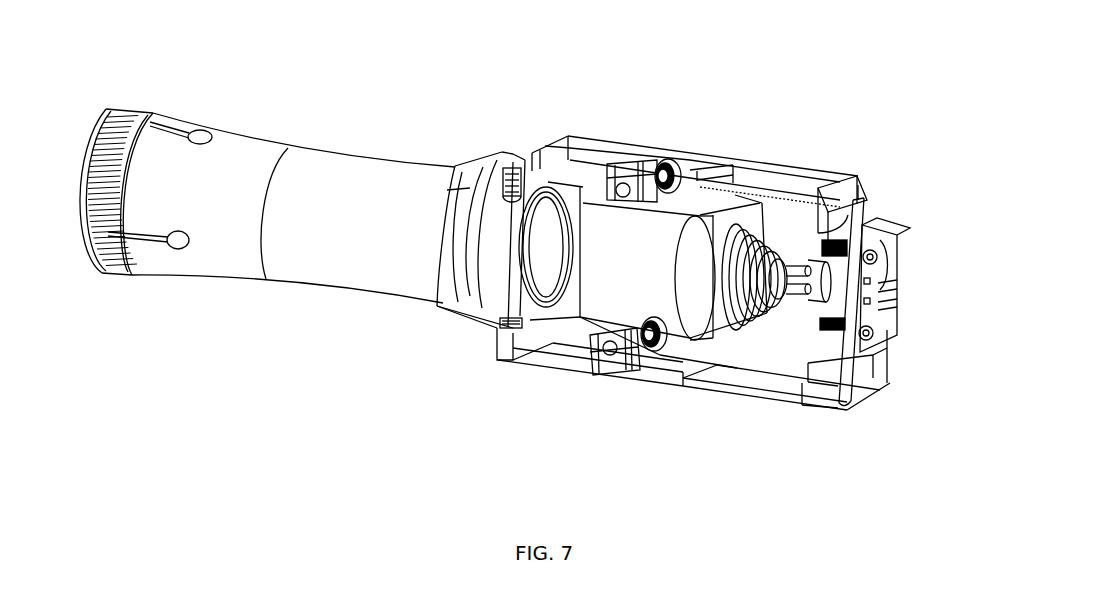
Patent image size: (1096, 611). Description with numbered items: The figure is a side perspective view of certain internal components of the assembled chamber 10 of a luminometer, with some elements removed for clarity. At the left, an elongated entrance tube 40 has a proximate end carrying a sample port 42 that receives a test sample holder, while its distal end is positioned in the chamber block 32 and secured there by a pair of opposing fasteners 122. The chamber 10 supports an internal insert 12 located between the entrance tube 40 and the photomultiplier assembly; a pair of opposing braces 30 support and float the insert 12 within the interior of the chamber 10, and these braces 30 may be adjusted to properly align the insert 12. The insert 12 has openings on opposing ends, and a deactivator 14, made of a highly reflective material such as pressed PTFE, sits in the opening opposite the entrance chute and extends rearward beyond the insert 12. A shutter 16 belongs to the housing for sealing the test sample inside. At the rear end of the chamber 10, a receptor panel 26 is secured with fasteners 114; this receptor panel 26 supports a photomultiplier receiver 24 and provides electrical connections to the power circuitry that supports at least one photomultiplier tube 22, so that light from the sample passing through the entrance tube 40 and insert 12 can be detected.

The chamber 10 is at (736, 152).
The insert 12 is at (749, 199).
The deactivator 14 is at (672, 274).
The shutter 16 is at (746, 312).
The photomultiplier tube 22 is at (795, 302).
The photomultiplier receiver 24 is at (835, 288).
The receptor panel 26 is at (867, 271).
The brace 30 is at (634, 164).
The chamber block 32 is at (477, 163).
The entrance tube 40 is at (300, 165).
The sample port 42 is at (113, 112).
The fastener 114 is at (843, 243).
The fastener 122 is at (512, 172).